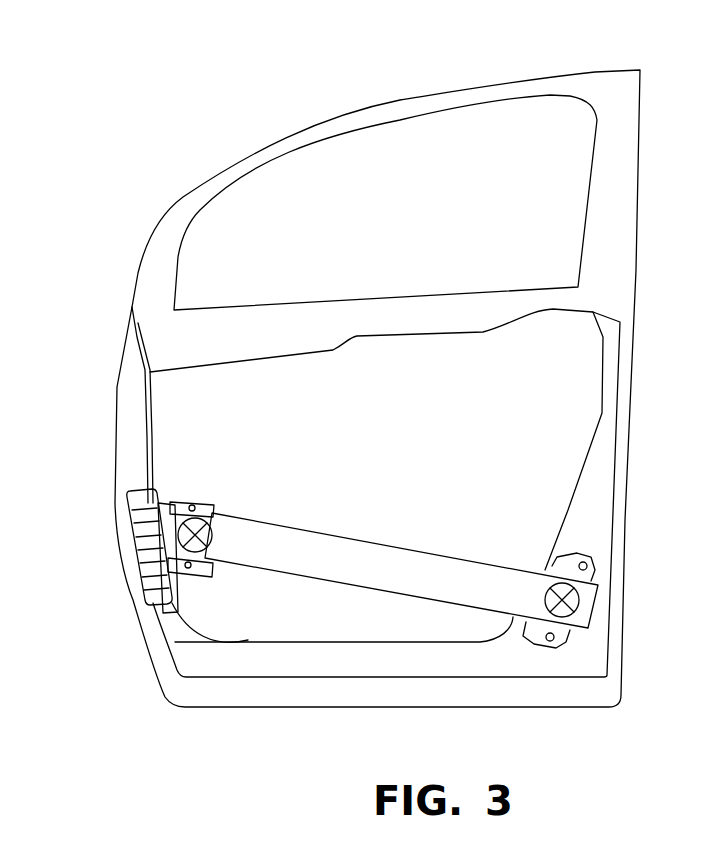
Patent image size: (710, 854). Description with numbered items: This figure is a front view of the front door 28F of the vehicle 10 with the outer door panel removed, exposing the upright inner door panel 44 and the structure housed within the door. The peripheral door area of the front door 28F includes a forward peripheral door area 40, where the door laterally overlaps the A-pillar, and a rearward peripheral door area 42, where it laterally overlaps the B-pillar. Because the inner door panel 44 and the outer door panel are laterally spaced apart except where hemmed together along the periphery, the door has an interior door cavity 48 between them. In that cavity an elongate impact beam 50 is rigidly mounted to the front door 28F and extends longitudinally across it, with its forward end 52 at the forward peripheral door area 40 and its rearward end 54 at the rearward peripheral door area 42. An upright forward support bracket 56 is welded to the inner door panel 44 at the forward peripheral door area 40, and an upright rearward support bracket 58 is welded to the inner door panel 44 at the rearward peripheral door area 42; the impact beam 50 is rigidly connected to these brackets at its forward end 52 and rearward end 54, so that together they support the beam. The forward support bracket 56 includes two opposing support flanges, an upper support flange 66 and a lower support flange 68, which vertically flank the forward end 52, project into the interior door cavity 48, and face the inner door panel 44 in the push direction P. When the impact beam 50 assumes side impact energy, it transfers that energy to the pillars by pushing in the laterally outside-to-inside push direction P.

The vehicle 10 is at (223, 146).
The front door 28F is at (290, 143).
The forward peripheral door area 40 is at (131, 468).
The rearward peripheral door area 42 is at (594, 546).
The inner door panel 44 is at (270, 604).
The interior door cavity 48 is at (288, 609).
The impact beam 50 is at (467, 604).
The forward end 52 is at (177, 534).
The rearward end 54 is at (572, 600).
The forward support bracket 56 is at (132, 502).
The rearward support bracket 58 is at (563, 638).
The upper support flange 66 is at (188, 495).
The lower support flange 68 is at (178, 568).
The push direction P is at (182, 512).